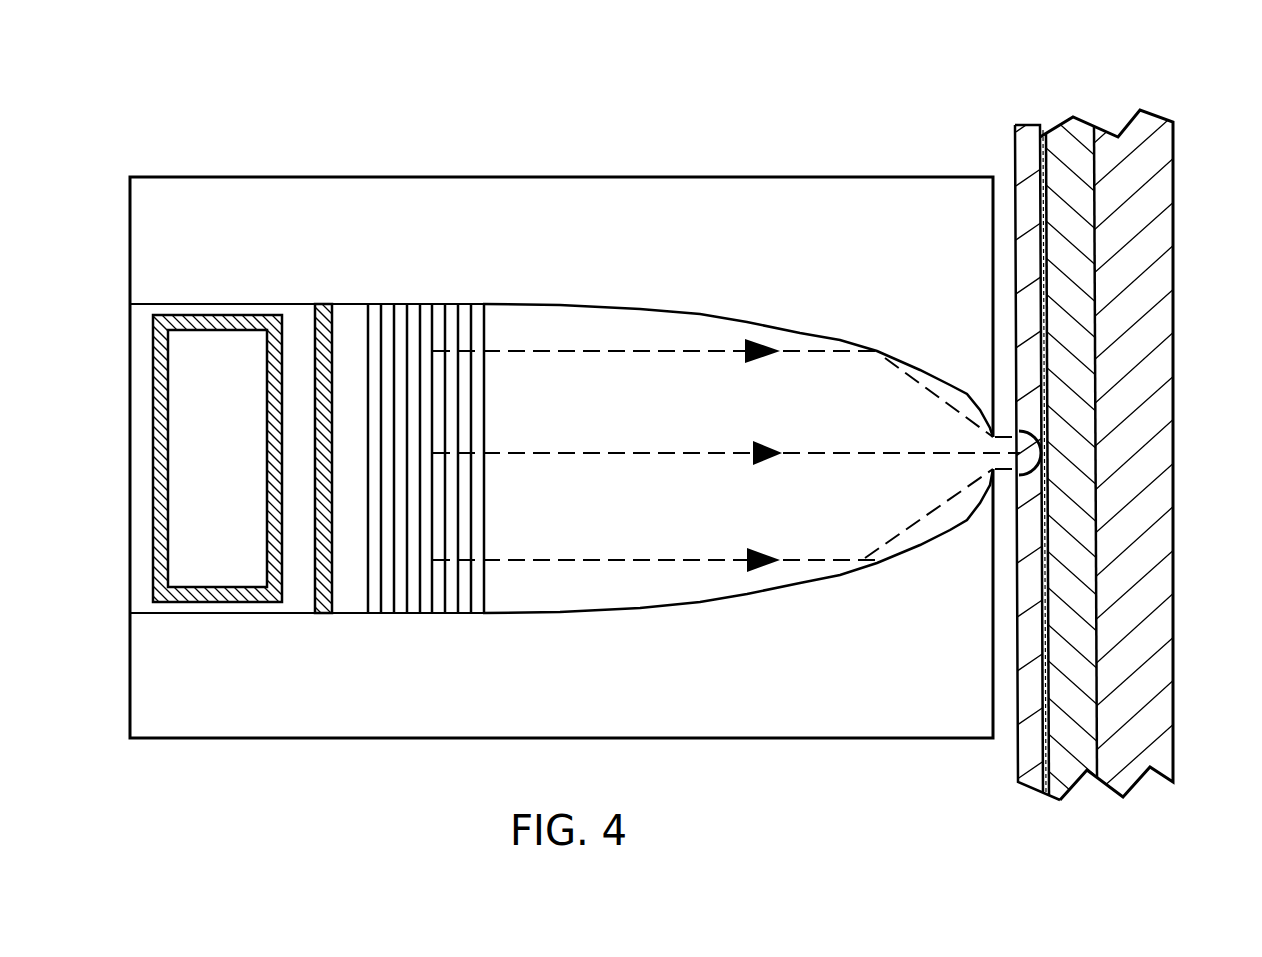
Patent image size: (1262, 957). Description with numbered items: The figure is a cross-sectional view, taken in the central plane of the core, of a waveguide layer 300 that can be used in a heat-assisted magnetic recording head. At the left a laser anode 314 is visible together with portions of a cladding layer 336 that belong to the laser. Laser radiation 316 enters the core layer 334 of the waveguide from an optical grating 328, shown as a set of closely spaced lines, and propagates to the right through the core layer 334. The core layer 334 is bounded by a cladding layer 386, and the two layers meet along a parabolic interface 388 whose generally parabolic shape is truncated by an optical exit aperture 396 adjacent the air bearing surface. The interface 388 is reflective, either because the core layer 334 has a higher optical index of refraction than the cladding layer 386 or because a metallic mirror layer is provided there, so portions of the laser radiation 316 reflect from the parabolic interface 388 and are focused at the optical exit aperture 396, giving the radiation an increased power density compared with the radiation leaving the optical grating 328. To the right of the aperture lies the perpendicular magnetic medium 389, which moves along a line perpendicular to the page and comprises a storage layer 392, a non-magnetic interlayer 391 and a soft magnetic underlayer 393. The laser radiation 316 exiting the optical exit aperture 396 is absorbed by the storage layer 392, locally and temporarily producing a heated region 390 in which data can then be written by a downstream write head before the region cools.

The waveguide layer 300 is at (296, 786).
The laser anode 314 is at (230, 466).
The laser radiation 316 is at (938, 508).
The optical grating 328 is at (485, 417).
The core layer 334 is at (570, 342).
The cladding layer 336 is at (320, 303).
The cladding layer 386 is at (580, 187).
The parabolic interface 388 is at (696, 312).
The perpendicular magnetic medium 389 is at (875, 99).
The heated region 390 is at (1026, 428).
The non-magnetic interlayer 391 is at (1043, 135).
The storage layer 392 is at (1015, 148).
The soft magnetic underlayer 393 is at (1065, 120).
The optical exit aperture 396 is at (993, 476).